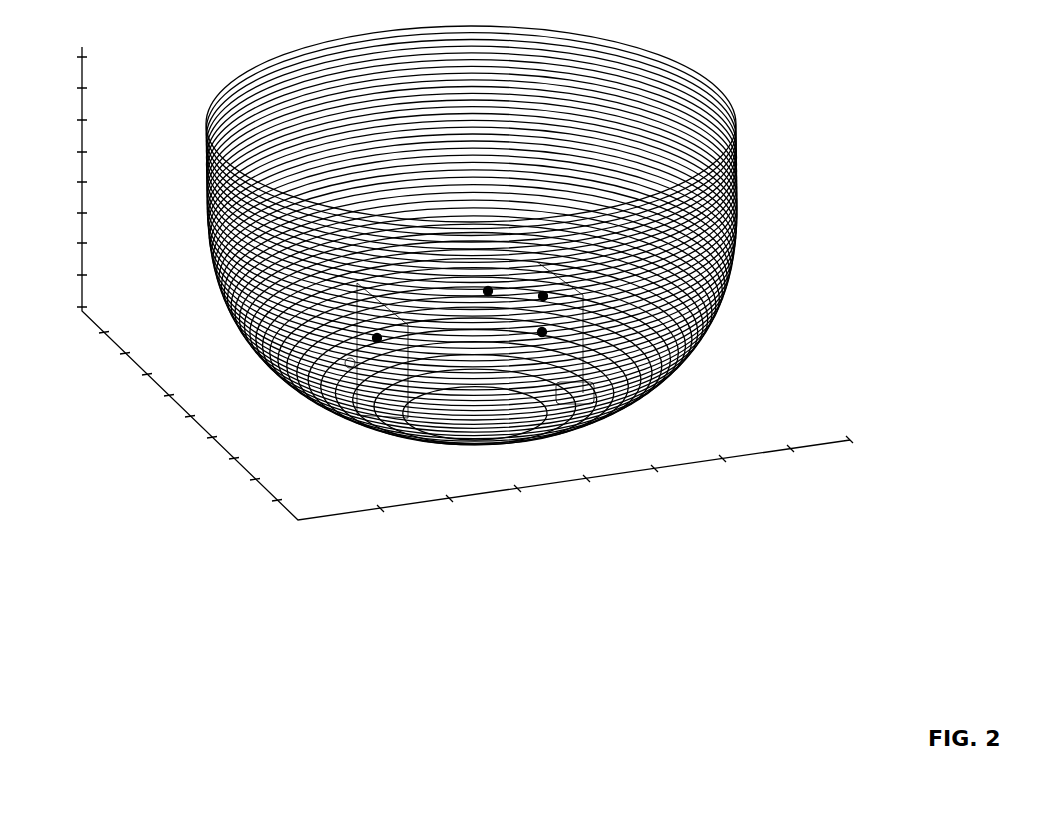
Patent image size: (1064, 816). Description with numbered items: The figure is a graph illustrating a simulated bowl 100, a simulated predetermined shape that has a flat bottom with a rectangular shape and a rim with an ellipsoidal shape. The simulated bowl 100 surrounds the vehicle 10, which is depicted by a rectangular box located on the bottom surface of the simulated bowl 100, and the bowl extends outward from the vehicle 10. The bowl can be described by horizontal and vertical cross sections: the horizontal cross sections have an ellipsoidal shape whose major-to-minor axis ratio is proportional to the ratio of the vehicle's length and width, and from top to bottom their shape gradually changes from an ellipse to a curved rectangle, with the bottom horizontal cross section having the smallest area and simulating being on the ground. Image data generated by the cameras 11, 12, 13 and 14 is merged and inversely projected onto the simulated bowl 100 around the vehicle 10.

The simulated bowl 100 is at (735, 245).
The vehicle 10 is at (443, 348).
The camera 11 is at (543, 296).
The camera 12 is at (542, 332).
The camera 13 is at (377, 338).
The camera 14 is at (488, 291).